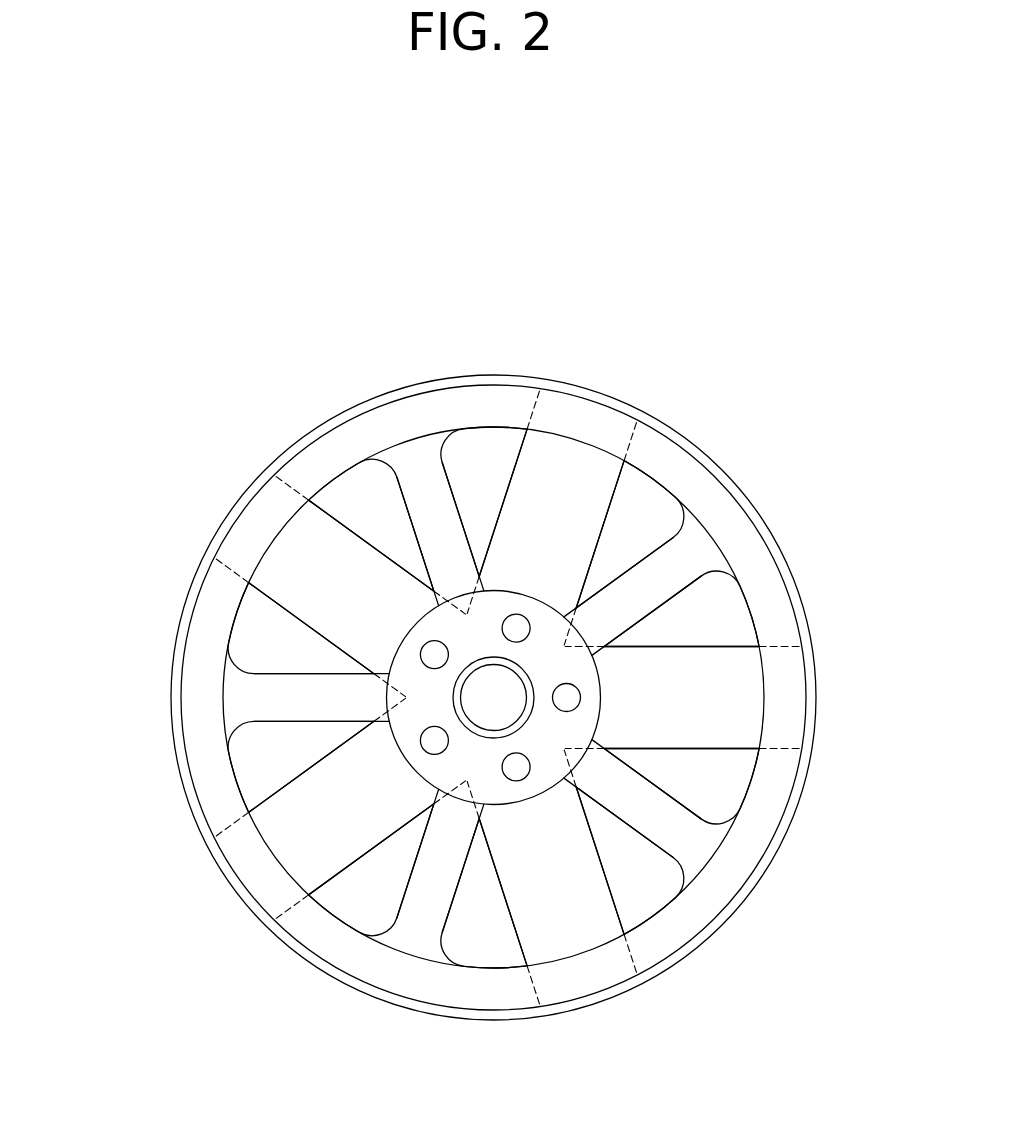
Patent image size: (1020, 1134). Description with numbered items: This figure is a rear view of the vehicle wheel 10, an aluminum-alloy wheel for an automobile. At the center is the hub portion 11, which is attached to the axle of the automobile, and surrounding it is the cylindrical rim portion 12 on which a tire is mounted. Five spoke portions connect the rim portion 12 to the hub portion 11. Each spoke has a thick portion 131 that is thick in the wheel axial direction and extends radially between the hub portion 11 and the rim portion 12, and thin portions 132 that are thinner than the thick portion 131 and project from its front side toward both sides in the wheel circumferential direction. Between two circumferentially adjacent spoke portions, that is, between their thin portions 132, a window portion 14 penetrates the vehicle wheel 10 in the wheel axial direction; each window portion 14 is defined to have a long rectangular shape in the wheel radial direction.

The vehicle wheel 10 is at (528, 294).
The hub portion 11 is at (562, 670).
The rim portion 12 is at (226, 884).
The thick portion 131 is at (258, 697).
The thin portions 132 is at (260, 643).
The window portion 14 is at (300, 568).